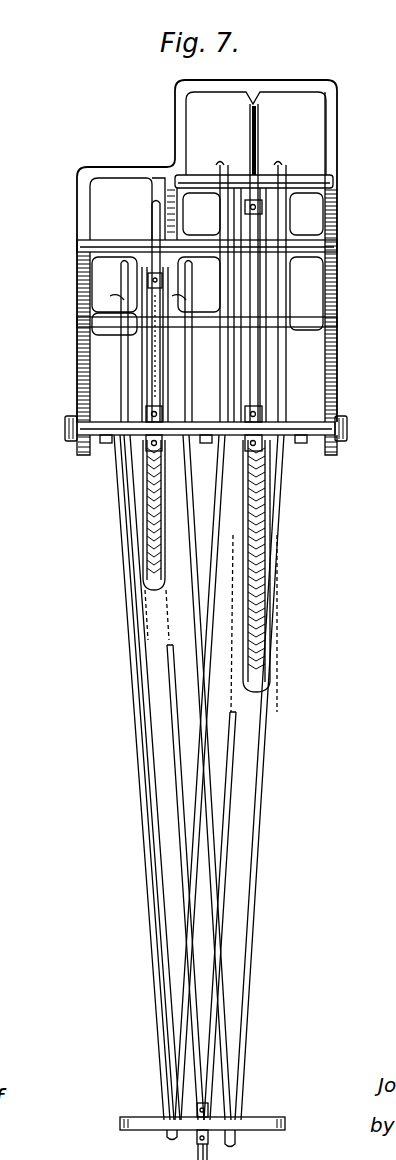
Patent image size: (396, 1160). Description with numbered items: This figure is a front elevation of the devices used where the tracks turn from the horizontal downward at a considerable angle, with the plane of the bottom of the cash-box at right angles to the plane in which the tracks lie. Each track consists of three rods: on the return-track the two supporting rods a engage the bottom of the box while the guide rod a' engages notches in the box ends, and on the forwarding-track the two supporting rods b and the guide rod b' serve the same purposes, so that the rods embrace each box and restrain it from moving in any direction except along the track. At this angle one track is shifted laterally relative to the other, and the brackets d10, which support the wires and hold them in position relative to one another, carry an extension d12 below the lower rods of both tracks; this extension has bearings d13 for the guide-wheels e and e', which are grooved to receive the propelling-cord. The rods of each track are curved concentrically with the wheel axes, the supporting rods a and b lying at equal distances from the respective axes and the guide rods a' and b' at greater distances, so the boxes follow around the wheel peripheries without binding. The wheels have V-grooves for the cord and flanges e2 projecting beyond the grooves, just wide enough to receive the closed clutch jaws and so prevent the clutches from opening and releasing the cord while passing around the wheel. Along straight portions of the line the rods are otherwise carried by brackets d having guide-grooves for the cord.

The supporting rods of the return-track a is at (235, 628).
The guide rod of the return-track a' is at (252, 612).
The supporting rods of the forwarding-track b is at (162, 691).
The guide rod of the forwarding-track b' is at (149, 661).
The brackets d is at (151, 1118).
The brackets d10 is at (177, 140).
The extension d12 is at (78, 388).
The bearings d13 is at (84, 442).
The guide-wheel e is at (274, 305).
The guide-wheel e' is at (180, 344).
The flanges e2 is at (163, 578).